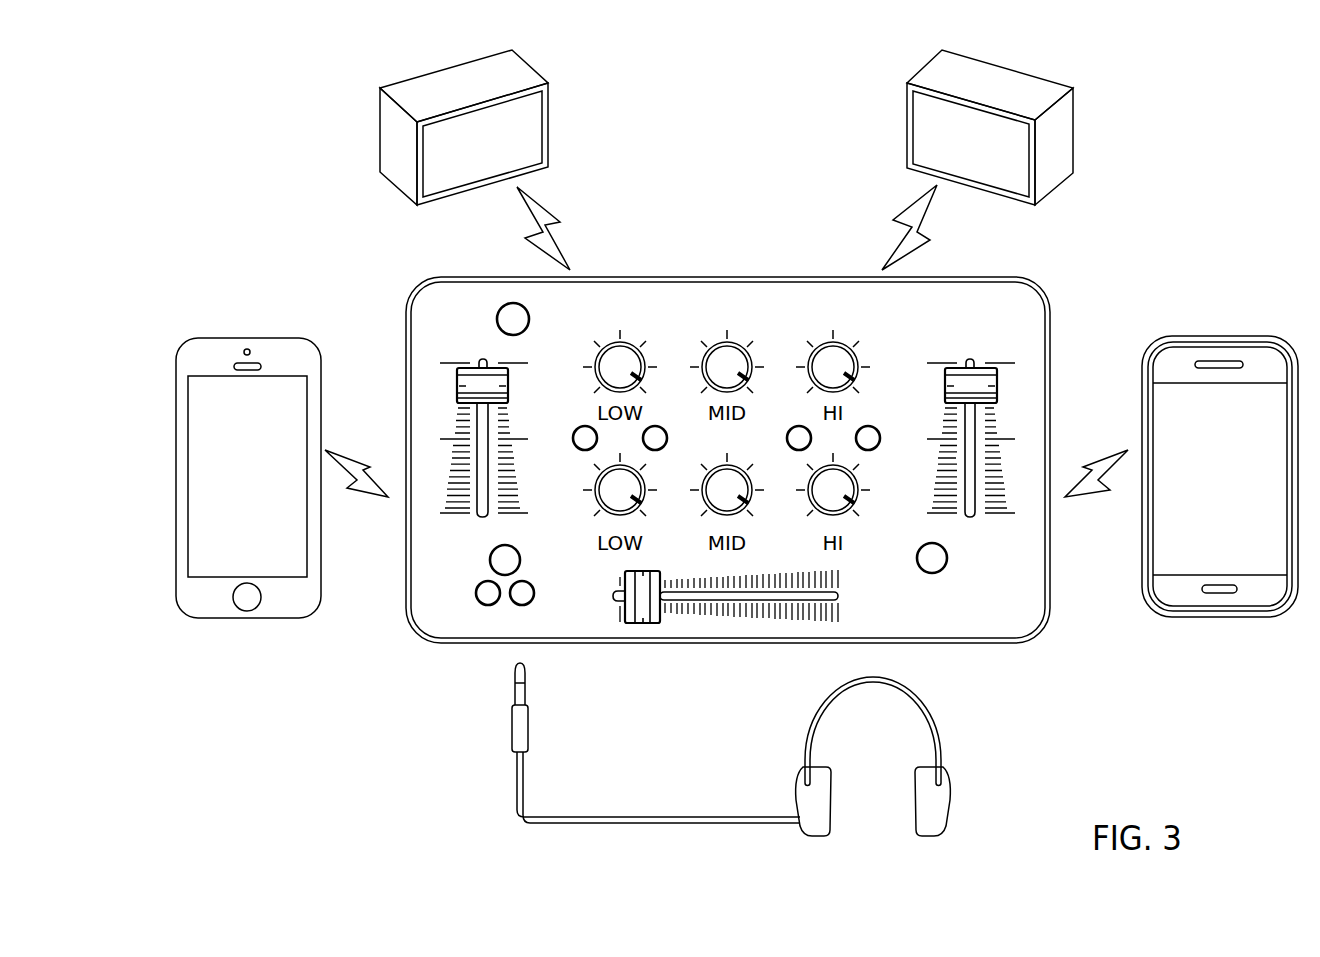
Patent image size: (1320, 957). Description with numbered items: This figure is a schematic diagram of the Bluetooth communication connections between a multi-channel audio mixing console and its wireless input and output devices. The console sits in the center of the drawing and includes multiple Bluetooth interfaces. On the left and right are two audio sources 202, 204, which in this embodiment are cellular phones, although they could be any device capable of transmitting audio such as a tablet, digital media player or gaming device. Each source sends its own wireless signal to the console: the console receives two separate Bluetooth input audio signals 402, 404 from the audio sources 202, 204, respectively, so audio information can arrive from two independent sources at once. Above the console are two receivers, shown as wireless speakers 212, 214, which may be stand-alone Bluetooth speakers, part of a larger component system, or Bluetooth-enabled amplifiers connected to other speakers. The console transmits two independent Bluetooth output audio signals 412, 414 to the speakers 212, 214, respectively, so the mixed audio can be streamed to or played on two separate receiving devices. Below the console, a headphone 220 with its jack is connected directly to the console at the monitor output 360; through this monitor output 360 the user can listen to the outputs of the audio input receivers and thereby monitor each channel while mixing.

The audio source 202 is at (207, 355).
The audio source 204 is at (1180, 355).
The speaker 212 is at (520, 72).
The speaker 214 is at (1060, 133).
The headphone 220 is at (938, 815).
The monitor output 360 is at (518, 643).
The Bluetooth input audio signal 402 is at (363, 468).
The Bluetooth input audio signal 404 is at (1093, 467).
The Bluetooth output audio signal 412 is at (560, 221).
The Bluetooth output audio signal 414 is at (930, 237).